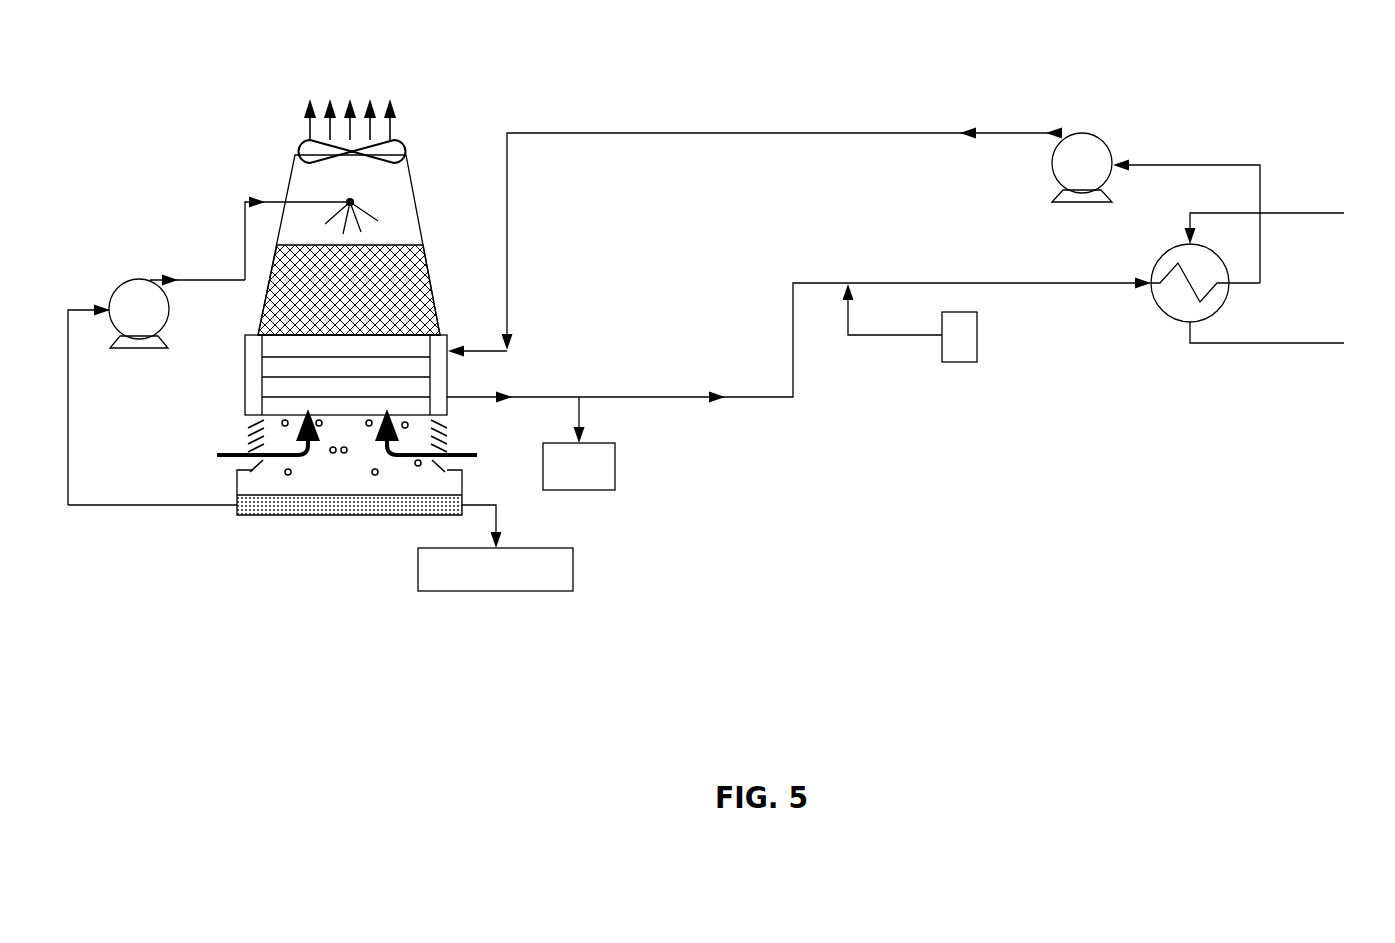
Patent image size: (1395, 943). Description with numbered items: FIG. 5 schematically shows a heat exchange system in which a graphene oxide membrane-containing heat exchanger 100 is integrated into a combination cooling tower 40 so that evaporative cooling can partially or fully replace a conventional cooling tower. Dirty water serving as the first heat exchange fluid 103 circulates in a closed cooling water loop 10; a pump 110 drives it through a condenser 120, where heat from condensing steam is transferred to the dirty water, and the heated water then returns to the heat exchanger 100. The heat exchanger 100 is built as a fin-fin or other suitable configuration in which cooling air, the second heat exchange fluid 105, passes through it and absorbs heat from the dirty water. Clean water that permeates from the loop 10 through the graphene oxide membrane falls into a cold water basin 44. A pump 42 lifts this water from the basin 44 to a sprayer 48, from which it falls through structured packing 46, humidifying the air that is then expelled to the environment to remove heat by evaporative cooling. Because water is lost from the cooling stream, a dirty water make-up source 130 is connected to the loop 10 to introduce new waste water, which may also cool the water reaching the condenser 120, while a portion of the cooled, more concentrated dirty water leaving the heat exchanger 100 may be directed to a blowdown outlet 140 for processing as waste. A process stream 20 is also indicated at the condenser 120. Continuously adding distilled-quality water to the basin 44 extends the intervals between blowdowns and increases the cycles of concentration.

The cooling water loop 10 is at (621, 100).
The process fluid stream 20 is at (1296, 366).
The combination cooling tower 40 is at (224, 163).
The pump 42 is at (125, 284).
The cold water basin 44 is at (350, 516).
The structured packing 46 is at (408, 244).
The sprayer 48 is at (356, 201).
The heat exchanger 100 is at (245, 376).
The first heat exchange fluid 103 is at (764, 133).
The second heat exchange fluid 105 is at (234, 455).
The pump 110 is at (1100, 138).
The condenser 120 is at (1164, 309).
The dirty water make-up source 130 is at (962, 363).
The blowdown outlet 140 is at (597, 443).